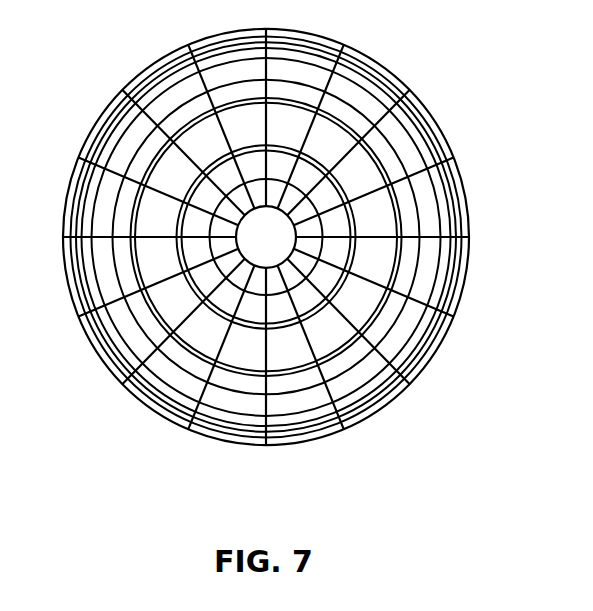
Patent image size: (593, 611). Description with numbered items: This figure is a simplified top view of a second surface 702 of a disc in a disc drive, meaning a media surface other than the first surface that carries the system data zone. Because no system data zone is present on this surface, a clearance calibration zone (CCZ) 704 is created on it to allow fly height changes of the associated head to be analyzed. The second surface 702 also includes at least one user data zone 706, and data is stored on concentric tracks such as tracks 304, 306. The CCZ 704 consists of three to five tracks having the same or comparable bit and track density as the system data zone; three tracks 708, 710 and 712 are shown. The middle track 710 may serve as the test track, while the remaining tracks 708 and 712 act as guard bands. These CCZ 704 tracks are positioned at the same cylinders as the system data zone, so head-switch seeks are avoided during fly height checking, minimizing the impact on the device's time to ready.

The concentric track 304 is at (258, 330).
The concentric track 306 is at (230, 372).
The second surface 702 is at (395, 105).
The clearance calibration zone (CCZ) 704 is at (466, 249).
The user data zone 706 is at (217, 205).
The track 708 is at (125, 398).
The track 710 is at (98, 360).
The track 712 is at (82, 337).